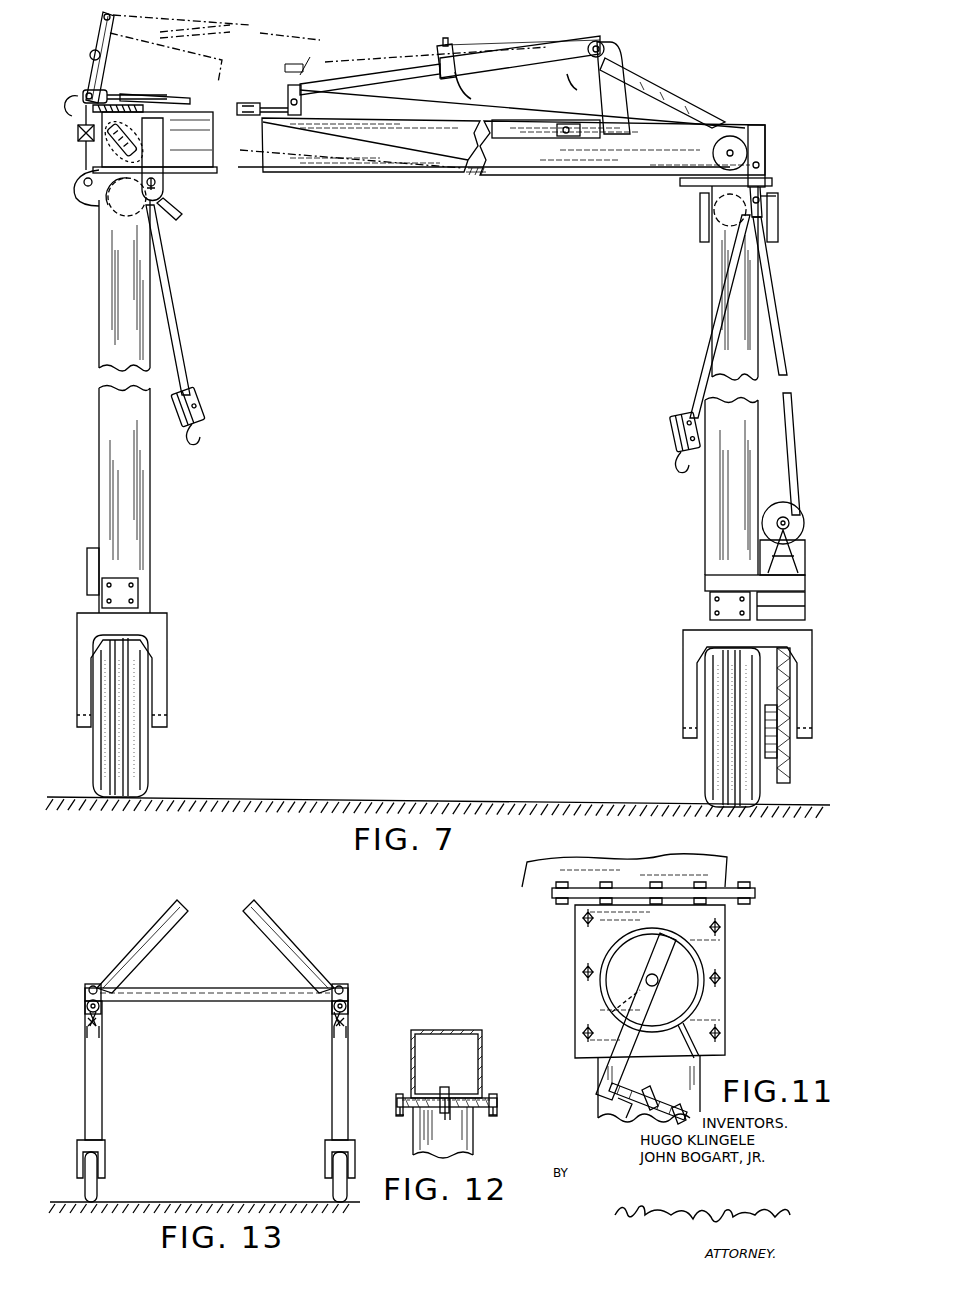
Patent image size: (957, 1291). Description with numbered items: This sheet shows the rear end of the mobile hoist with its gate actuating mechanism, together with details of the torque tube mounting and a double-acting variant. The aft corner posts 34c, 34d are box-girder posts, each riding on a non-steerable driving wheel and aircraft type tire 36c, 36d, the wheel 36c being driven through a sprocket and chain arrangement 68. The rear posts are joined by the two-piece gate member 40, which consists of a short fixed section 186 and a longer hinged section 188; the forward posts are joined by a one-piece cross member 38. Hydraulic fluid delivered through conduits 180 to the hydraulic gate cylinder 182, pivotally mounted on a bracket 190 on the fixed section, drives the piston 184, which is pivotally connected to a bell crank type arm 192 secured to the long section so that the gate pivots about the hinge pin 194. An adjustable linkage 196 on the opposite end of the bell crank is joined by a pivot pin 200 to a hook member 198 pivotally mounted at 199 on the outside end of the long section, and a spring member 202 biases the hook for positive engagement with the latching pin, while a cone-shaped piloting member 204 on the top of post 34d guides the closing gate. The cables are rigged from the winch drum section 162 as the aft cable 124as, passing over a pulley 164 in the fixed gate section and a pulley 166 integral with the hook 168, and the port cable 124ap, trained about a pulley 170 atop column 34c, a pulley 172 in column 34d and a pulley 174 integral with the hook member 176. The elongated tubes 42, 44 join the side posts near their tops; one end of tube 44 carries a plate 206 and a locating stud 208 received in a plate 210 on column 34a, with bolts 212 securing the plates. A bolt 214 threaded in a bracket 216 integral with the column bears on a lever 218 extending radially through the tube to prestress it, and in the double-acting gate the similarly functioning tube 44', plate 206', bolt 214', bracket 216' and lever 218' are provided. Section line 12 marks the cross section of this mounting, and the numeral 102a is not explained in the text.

In FIG. 11, the section line 12— 12 is at (560, 975).
In FIG. 11, the upright corner post 34a is at (702, 1102).
In FIG. 12, the upright corner post 34a is at (455, 1030).
In FIG. 7, the upright corner post 34c is at (715, 515).
In FIG. 7, the upright corner post 34d is at (100, 290).
In FIG. 7, the wheel and tire 36c is at (710, 775).
In FIG. 7, the wheel and tire 36d is at (96, 760).
In FIG. 11, the cross member 38 is at (715, 866).
In FIG. 7, the gate member 40 is at (676, 78).
In FIG. 7, the elongated tube 42 is at (115, 218).
In FIG. 7, the elongated tube 44 is at (697, 217).
In FIG. 11, the elongated tube 44 is at (618, 980).
In FIG. 12, the elongated tube 44 is at (464, 1132).
In FIG. 13, the elongated tube 44 is at (315, 1015).
In FIG. 13, the elongated tube 44' is at (115, 1010).
In FIG. 7, the sprocket and chain arrangement 68 is at (790, 778).
In FIG. 7, the winch 102a is at (835, 492).
In FIG. 7, the port side cable 124ap is at (248, 170).
In FIG. 7, the aft cable 124as is at (694, 390).
In FIG. 7, the winch drum section 162 is at (805, 528).
In FIG. 7, the pulley 164 is at (738, 140).
In FIG. 7, the pulley 166 is at (672, 430).
In FIG. 7, the hook 168 is at (674, 470).
In FIG. 7, the pulley 170 is at (766, 182).
In FIG. 7, the pulley 172 is at (166, 184).
In FIG. 7, the pulley 174 is at (200, 396).
In FIG. 7, the hook member 176 is at (202, 440).
In FIG. 7, the conduits 180 is at (474, 94).
In FIG. 7, the hydraulic gate cylinder 182 is at (508, 48).
In FIG. 7, the piston 184 is at (366, 74).
In FIG. 7, the fixed section of gate 186 is at (640, 166).
In FIG. 7, the hinged section of gate 188 is at (370, 170).
In FIG. 7, the bracket 190 is at (608, 52).
In FIG. 7, the bell crank type arm 192 is at (276, 105).
In FIG. 7, the hinge pin 194 is at (568, 122).
In FIG. 7, the adjustable linkage 196 is at (222, 30).
In FIG. 7, the hook member 198 is at (70, 96).
In FIG. 7, the pivot 199 is at (78, 132).
In FIG. 7, the pivot pin 200 is at (88, 95).
In FIG. 7, the spring member 202 is at (140, 94).
In FIG. 7, the cone-shaped piloting member 204 is at (115, 140).
In FIG. 11, the plate 206 is at (679, 981).
In FIG. 12, the plate 206 is at (431, 1119).
In FIG. 13, the plate 206 is at (364, 1000).
In FIG. 13, the plate 206' is at (62, 999).
In FIG. 11, the locating stud 208 is at (580, 1008).
In FIG. 12, the locating stud 208 is at (458, 1066).
In FIG. 11, the plate 210 is at (728, 1060).
In FIG. 12, the plate 210 is at (398, 1094).
In FIG. 11, the bolts 212 is at (580, 918).
In FIG. 12, the bolts 212 is at (495, 1113).
In FIG. 11, the bolt 214 is at (652, 1093).
In FIG. 13, the bolt 214 is at (361, 1029).
In FIG. 13, the bolt 214' is at (58, 1025).
In FIG. 11, the bracket 216 is at (622, 1105).
In FIG. 13, the bracket 216 is at (317, 1046).
In FIG. 13, the bracket 216' is at (63, 1041).
In FIG. 11, the lever 218 is at (628, 1016).
In FIG. 12, the lever 218 is at (410, 1129).
In FIG. 13, the lever 218 is at (309, 1031).
In FIG. 13, the lever 218' is at (125, 1029).